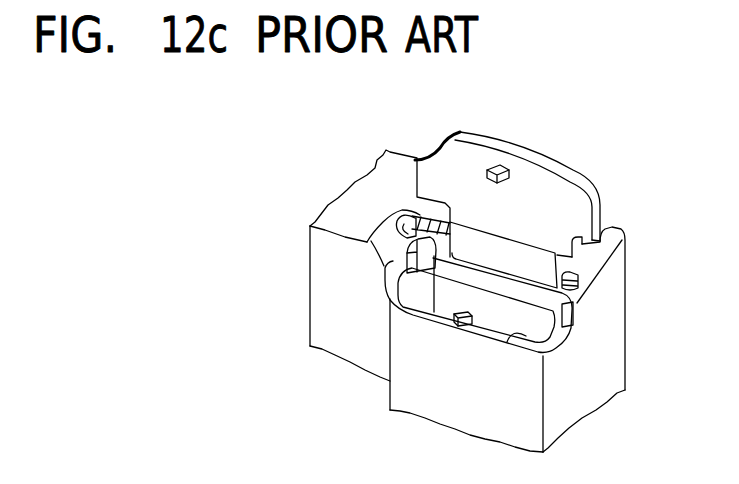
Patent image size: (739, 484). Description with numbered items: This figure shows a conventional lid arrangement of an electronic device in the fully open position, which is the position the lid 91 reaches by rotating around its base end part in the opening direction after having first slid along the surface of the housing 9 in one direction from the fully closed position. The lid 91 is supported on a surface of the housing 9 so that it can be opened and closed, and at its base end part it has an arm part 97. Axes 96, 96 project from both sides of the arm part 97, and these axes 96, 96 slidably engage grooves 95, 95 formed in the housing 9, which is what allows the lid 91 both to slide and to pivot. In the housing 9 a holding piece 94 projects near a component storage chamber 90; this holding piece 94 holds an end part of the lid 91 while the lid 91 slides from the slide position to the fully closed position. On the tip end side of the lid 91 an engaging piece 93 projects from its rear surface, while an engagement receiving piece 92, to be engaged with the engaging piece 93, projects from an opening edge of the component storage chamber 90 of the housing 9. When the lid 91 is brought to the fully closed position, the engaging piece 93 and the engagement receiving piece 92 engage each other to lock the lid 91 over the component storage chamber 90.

The housing 9 is at (605, 370).
The component storage chamber 90 is at (513, 333).
The lid 91 is at (573, 192).
The engagement receiving piece 92 is at (458, 318).
The engaging piece 93 is at (503, 168).
The holding piece 94 is at (405, 263).
The groove 95 is at (404, 238).
The axis 96 is at (446, 208).
The arm part 97 is at (540, 262).